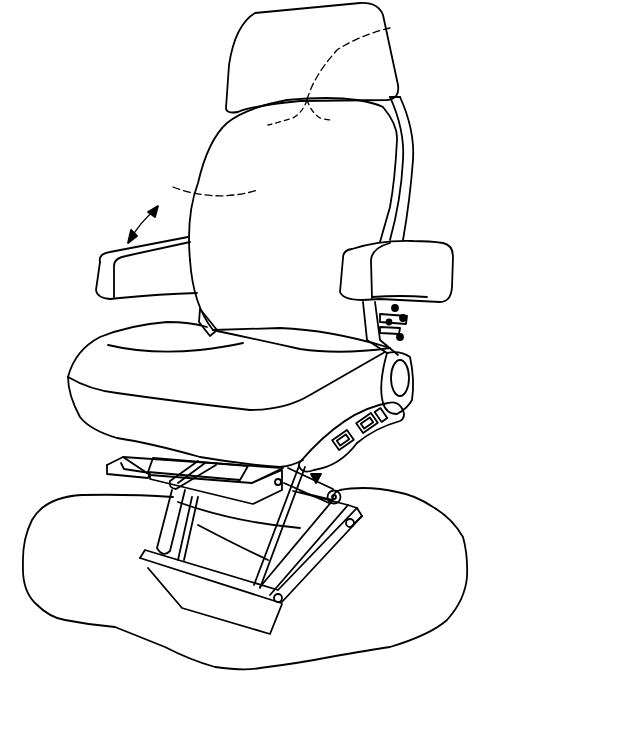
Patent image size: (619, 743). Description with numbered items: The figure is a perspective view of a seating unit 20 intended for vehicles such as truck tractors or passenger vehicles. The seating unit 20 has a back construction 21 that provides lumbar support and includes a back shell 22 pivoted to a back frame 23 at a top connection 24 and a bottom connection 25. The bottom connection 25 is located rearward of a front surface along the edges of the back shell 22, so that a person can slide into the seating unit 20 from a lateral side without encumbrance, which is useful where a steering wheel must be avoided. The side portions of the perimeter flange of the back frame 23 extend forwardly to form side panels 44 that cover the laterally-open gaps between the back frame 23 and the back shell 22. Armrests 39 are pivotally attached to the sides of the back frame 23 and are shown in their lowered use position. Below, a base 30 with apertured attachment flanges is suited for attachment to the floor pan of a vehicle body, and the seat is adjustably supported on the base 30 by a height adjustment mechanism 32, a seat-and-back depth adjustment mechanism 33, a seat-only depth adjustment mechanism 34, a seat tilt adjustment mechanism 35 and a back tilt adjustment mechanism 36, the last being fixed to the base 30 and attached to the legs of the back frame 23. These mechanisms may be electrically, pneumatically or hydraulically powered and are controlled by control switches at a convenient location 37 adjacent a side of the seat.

The seating unit 20 is at (508, 95).
The back construction 21 is at (442, 196).
The back shell 22 is at (193, 206).
The back frame 23 is at (401, 103).
The top connection 24 is at (392, 28).
The bottom connection 25 is at (202, 318).
The base 30 is at (362, 544).
The height adjustment mechanism 32 is at (167, 522).
The seat-and-back depth adjustment mechanism 33 is at (321, 555).
The seat-only depth adjustment mechanism 34 is at (265, 492).
The seat tilt adjustment mechanism 35 is at (339, 488).
The back tilt adjustment mechanism 36 is at (415, 368).
The control switch location 37 is at (370, 447).
The armrests 39 is at (98, 268).
The side panels 44 is at (408, 160).